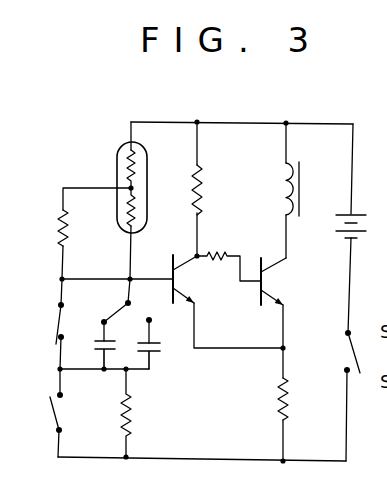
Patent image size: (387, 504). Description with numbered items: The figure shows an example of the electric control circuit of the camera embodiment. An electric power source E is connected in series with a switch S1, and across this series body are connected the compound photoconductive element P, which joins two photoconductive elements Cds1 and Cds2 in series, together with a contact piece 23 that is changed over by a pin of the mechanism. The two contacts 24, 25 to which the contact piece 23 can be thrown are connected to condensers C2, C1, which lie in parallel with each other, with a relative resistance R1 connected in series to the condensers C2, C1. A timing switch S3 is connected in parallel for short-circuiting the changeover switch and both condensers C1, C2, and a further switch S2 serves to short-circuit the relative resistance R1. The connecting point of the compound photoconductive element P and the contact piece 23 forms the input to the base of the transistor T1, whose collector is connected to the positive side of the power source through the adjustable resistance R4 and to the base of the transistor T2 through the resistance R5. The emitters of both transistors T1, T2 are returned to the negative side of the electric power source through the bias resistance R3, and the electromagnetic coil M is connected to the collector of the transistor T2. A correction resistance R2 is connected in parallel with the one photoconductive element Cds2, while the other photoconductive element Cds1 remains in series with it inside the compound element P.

The compound photoconductive element P is at (149, 151).
The photoconductive element Cds1 is at (117, 163).
The photoconductive element Cds2 is at (115, 228).
The relative resistance R1 is at (139, 413).
The correction resistance R2 is at (49, 228).
The bias resistance R3 is at (296, 401).
The adjustable resistance R4 is at (210, 190).
The resistance R5 is at (229, 257).
The condenser C1 is at (105, 352).
The condenser C2 is at (152, 353).
The switch S1 is at (339, 351).
The switch S2 is at (40, 412).
The timing switch S3 is at (42, 323).
The transistor T1 is at (192, 279).
The transistor T2 is at (283, 281).
The electromagnetic coil M is at (303, 189).
The electric power source E is at (339, 230).
The contact piece 23 is at (120, 306).
The contact 24 is at (163, 328).
The contact 25 is at (90, 327).